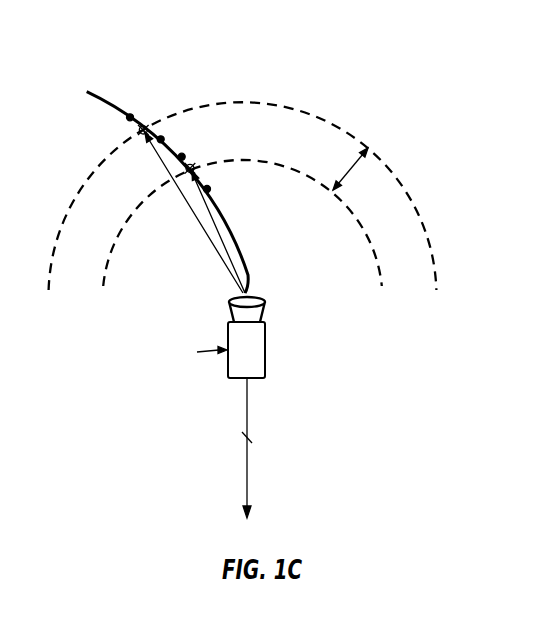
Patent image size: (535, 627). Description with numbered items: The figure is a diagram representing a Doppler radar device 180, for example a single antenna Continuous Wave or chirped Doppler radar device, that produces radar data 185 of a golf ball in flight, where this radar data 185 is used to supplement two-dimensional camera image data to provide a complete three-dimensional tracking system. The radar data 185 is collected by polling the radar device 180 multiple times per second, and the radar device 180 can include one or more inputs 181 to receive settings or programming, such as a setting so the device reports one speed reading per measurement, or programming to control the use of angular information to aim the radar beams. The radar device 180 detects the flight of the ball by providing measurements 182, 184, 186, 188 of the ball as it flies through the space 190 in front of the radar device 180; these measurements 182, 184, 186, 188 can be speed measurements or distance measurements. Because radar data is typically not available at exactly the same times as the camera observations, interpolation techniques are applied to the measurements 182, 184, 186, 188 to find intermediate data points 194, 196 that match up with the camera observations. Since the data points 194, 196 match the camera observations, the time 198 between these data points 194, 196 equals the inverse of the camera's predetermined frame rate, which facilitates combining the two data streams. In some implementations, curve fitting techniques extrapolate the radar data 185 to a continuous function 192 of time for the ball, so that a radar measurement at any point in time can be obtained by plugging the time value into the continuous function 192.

The Doppler radar device 180 is at (247, 363).
The input 181 is at (197, 352).
The measurement 182 is at (208, 188).
The measurement 184 is at (182, 156).
The radar data 185 is at (247, 463).
The measurement 186 is at (161, 138).
The measurement 188 is at (131, 116).
The space 190 is at (388, 121).
The continuous function 192 is at (107, 107).
The intermediate data point 194 is at (189, 173).
The intermediate data point 196 is at (143, 134).
The time 198 is at (350, 173).